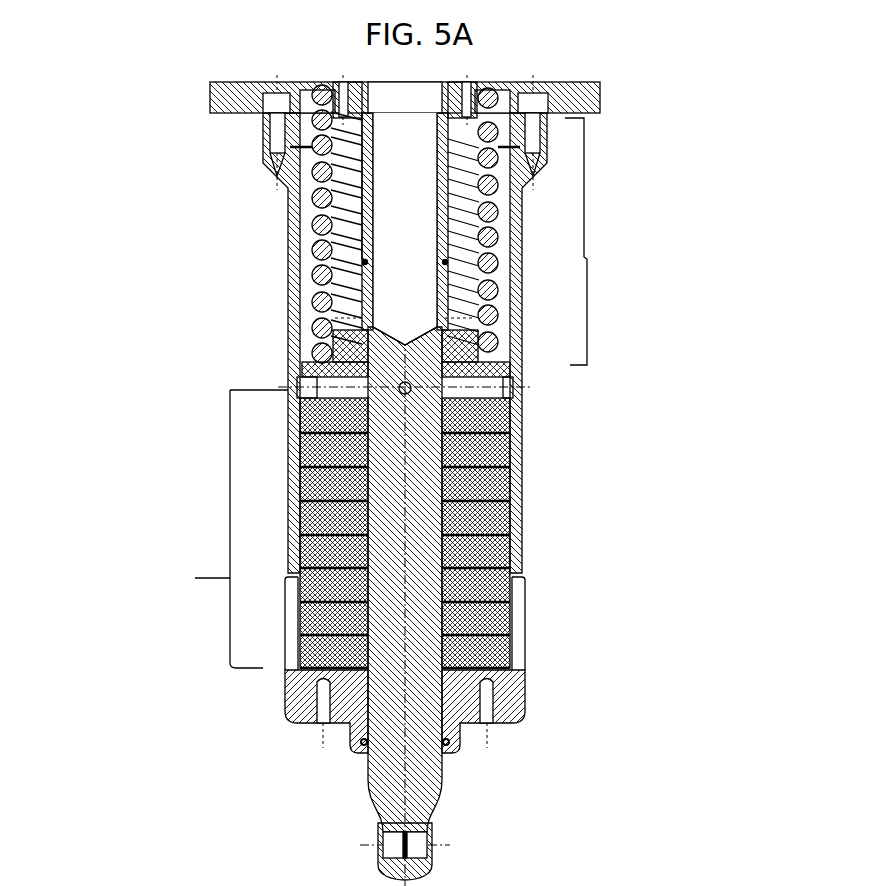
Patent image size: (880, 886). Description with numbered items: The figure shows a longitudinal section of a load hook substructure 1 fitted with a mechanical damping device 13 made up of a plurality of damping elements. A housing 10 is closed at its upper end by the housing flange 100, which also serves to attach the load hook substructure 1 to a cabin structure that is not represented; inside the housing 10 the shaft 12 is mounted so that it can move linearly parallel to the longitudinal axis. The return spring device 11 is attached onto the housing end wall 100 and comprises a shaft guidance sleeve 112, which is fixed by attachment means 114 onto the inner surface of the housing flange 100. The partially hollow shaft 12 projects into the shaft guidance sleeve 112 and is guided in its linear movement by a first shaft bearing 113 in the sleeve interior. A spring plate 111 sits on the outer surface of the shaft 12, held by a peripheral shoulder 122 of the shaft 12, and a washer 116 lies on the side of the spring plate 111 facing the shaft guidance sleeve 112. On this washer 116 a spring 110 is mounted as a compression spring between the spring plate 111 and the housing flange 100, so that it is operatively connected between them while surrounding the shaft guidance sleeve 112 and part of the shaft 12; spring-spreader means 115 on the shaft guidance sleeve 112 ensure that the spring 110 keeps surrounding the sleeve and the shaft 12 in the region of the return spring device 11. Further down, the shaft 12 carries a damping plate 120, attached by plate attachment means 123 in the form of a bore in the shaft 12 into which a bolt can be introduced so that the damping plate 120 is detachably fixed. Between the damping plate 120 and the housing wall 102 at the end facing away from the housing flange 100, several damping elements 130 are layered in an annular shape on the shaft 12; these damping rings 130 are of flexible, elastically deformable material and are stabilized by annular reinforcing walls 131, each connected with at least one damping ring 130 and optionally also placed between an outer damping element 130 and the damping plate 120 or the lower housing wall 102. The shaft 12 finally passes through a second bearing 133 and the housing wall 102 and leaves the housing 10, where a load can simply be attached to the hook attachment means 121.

The load hook substructure 1 is at (635, 124).
The housing 10 is at (235, 204).
The return spring device 11 is at (587, 258).
The shaft 12 is at (426, 452).
The mechanical damping device 13 is at (227, 577).
The housing flange 100 is at (228, 97).
The housing wall 102 is at (510, 707).
The spring 110 is at (313, 203).
The spring plate 111 is at (302, 364).
The shaft guidance sleeve 112 is at (366, 228).
The first shaft bearing 113 is at (362, 295).
The attachment means 114 is at (464, 92).
The spring-spreader means 115 is at (467, 300).
The washer 116 is at (503, 366).
The damping plate 120 is at (340, 392).
The hook attachment means 121 is at (380, 845).
The peripheral shoulder 122 is at (333, 385).
The plate attachment means 123 is at (411, 389).
The damping element 130 is at (502, 463).
The reinforcing wall 131 is at (300, 637).
The second bearing 133 is at (447, 695).